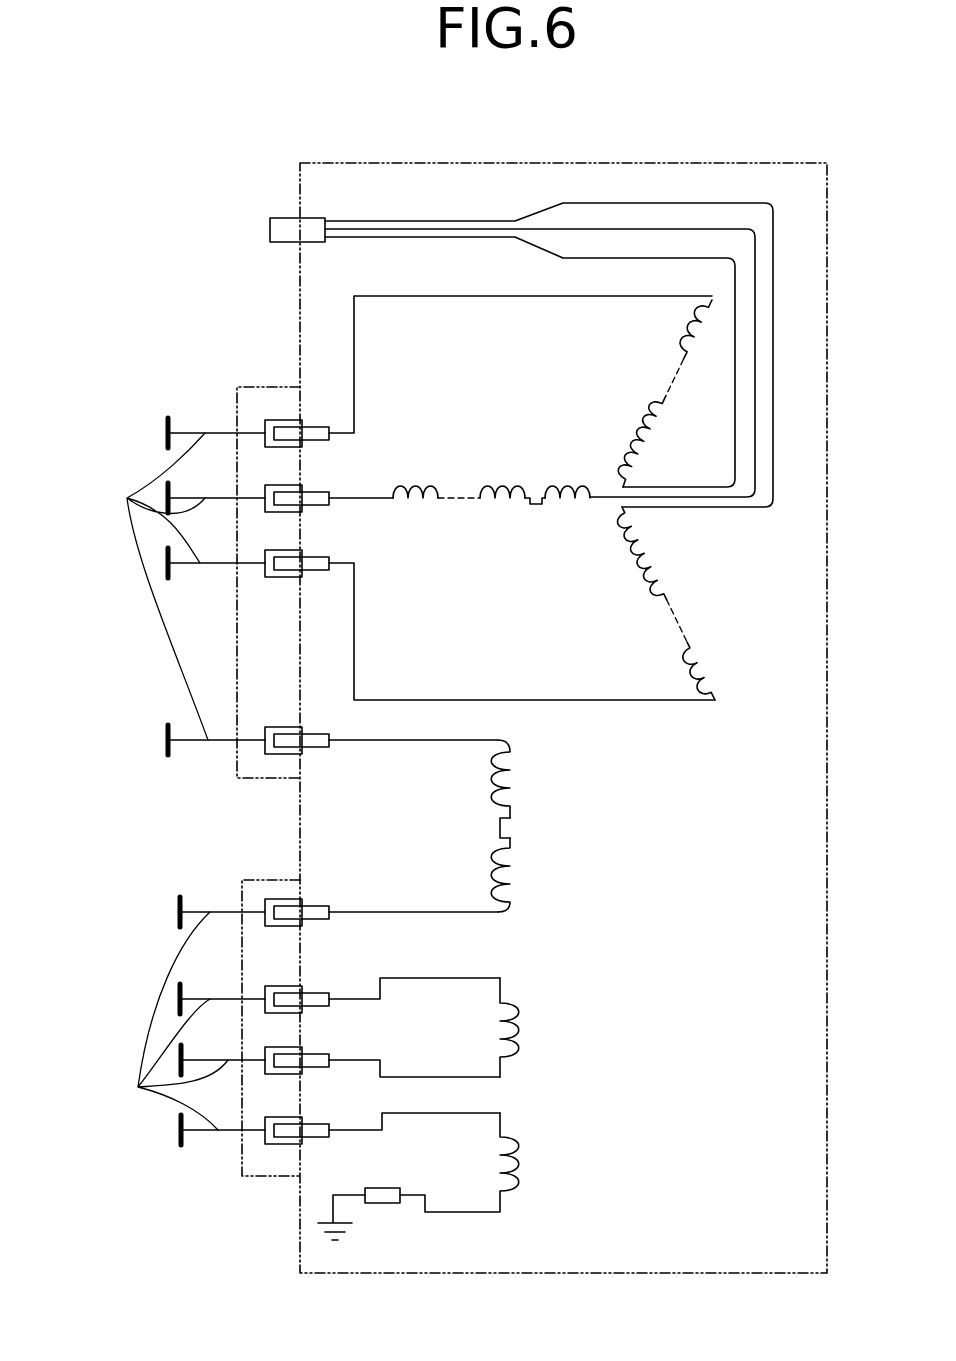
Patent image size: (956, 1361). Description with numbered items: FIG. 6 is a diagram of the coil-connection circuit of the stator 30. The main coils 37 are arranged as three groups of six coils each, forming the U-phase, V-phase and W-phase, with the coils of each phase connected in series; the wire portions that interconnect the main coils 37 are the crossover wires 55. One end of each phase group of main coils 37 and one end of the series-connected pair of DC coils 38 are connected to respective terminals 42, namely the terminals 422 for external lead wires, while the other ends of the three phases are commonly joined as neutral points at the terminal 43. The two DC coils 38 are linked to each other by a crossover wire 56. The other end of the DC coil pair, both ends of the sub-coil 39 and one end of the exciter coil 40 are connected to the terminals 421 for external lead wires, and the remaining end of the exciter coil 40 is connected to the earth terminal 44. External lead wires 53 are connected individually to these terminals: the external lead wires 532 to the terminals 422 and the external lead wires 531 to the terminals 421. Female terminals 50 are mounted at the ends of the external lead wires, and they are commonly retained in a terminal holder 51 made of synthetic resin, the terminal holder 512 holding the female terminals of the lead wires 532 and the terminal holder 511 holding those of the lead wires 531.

The stator 30 is at (545, 163).
The terminal 43 is at (306, 226).
The main coils 37 is at (418, 492).
The crossover wires 55 is at (536, 504).
The female terminals 50 is at (278, 420).
The terminals for external lead wires 42 is at (510, 713).
The terminals for external lead wires 421 is at (322, 1122).
The terminals for external lead wires 422 is at (317, 441).
The external lead wires 53 is at (166, 781).
The external lead wires 531 is at (174, 1021).
The external lead wires 532 is at (166, 586).
The terminal holder 51 is at (250, 819).
The terminal holder 511 is at (268, 1180).
The terminal holder 512 is at (268, 780).
The DC coils 38 is at (512, 788).
The crossover wire 56 is at (512, 828).
The sub-coil 39 is at (515, 1017).
The exciter coil 40 is at (515, 1153).
The earth terminal 44 is at (383, 1203).